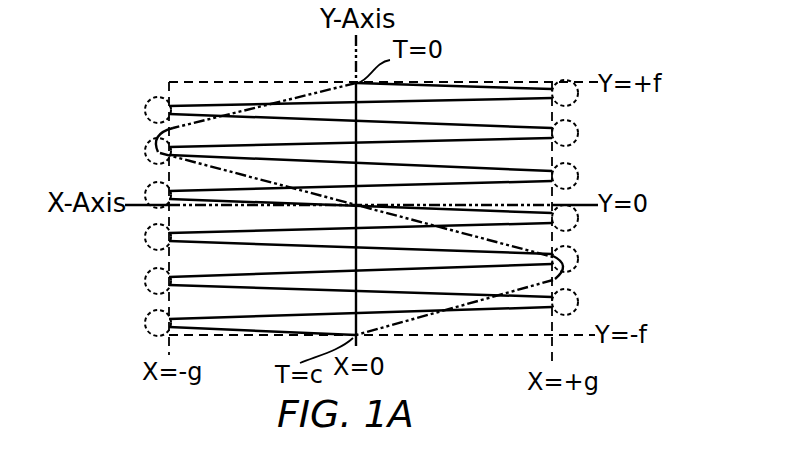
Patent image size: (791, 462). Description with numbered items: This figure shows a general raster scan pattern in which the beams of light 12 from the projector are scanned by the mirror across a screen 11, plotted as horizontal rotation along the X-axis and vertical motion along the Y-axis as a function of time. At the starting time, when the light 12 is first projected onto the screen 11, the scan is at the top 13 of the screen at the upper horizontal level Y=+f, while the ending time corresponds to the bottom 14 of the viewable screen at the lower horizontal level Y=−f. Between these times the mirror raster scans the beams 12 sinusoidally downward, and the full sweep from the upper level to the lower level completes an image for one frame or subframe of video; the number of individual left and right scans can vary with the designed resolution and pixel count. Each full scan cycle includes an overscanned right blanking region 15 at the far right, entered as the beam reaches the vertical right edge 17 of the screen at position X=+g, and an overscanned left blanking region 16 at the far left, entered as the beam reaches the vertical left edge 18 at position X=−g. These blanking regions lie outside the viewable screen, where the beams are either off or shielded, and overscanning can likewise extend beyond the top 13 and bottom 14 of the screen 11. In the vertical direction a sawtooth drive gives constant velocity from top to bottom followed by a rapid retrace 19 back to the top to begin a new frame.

The screen 11 is at (360, 230).
The beams of light 12 is at (470, 98).
The top of the screen 13 is at (196, 80).
The bottom of the viewable screen 14 is at (445, 337).
The right blanking region 15 is at (578, 130).
The left blanking region 16 is at (145, 282).
The vertical right edge of the screen 17 is at (555, 157).
The vertical left edge of the screen 18 is at (168, 173).
The retrace 19 is at (285, 88).